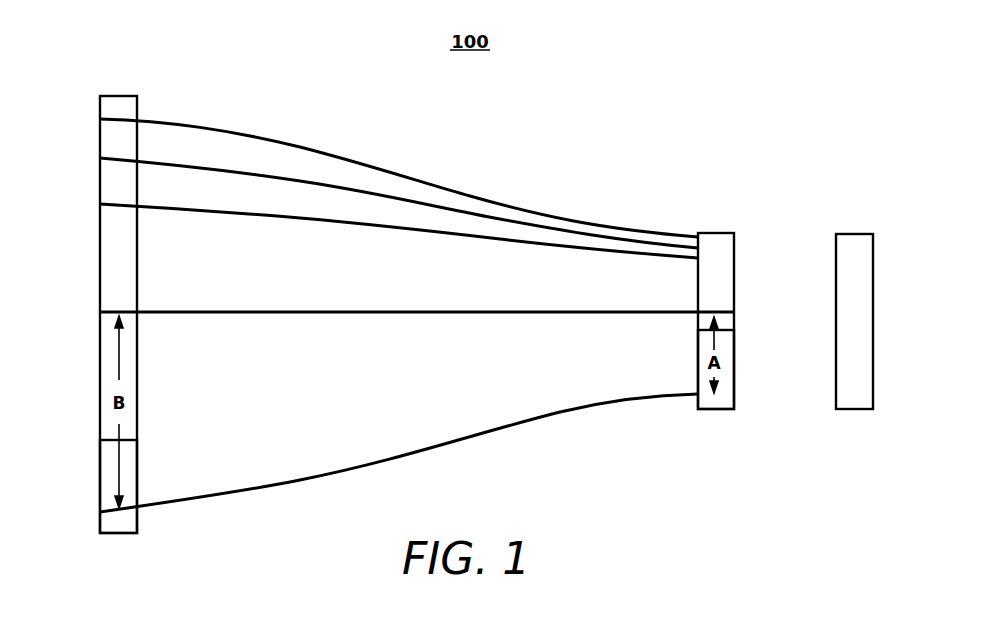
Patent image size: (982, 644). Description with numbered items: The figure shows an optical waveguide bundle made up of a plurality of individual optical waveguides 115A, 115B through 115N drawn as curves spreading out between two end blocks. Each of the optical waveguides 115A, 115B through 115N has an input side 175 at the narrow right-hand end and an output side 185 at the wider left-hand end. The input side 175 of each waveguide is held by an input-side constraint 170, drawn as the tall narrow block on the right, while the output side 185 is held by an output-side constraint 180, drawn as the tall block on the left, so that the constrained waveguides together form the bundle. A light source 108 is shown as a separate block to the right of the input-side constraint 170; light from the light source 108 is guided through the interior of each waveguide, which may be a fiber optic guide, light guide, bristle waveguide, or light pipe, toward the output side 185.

The light source 108 is at (848, 233).
The optical waveguide 115N is at (283, 142).
The optical waveguide 115B is at (385, 313).
The optical waveguide 115A is at (500, 426).
The input-side constraint 170 is at (734, 283).
The input side 175 is at (734, 395).
The output-side constraint 180 is at (100, 240).
The output side 185 is at (100, 514).